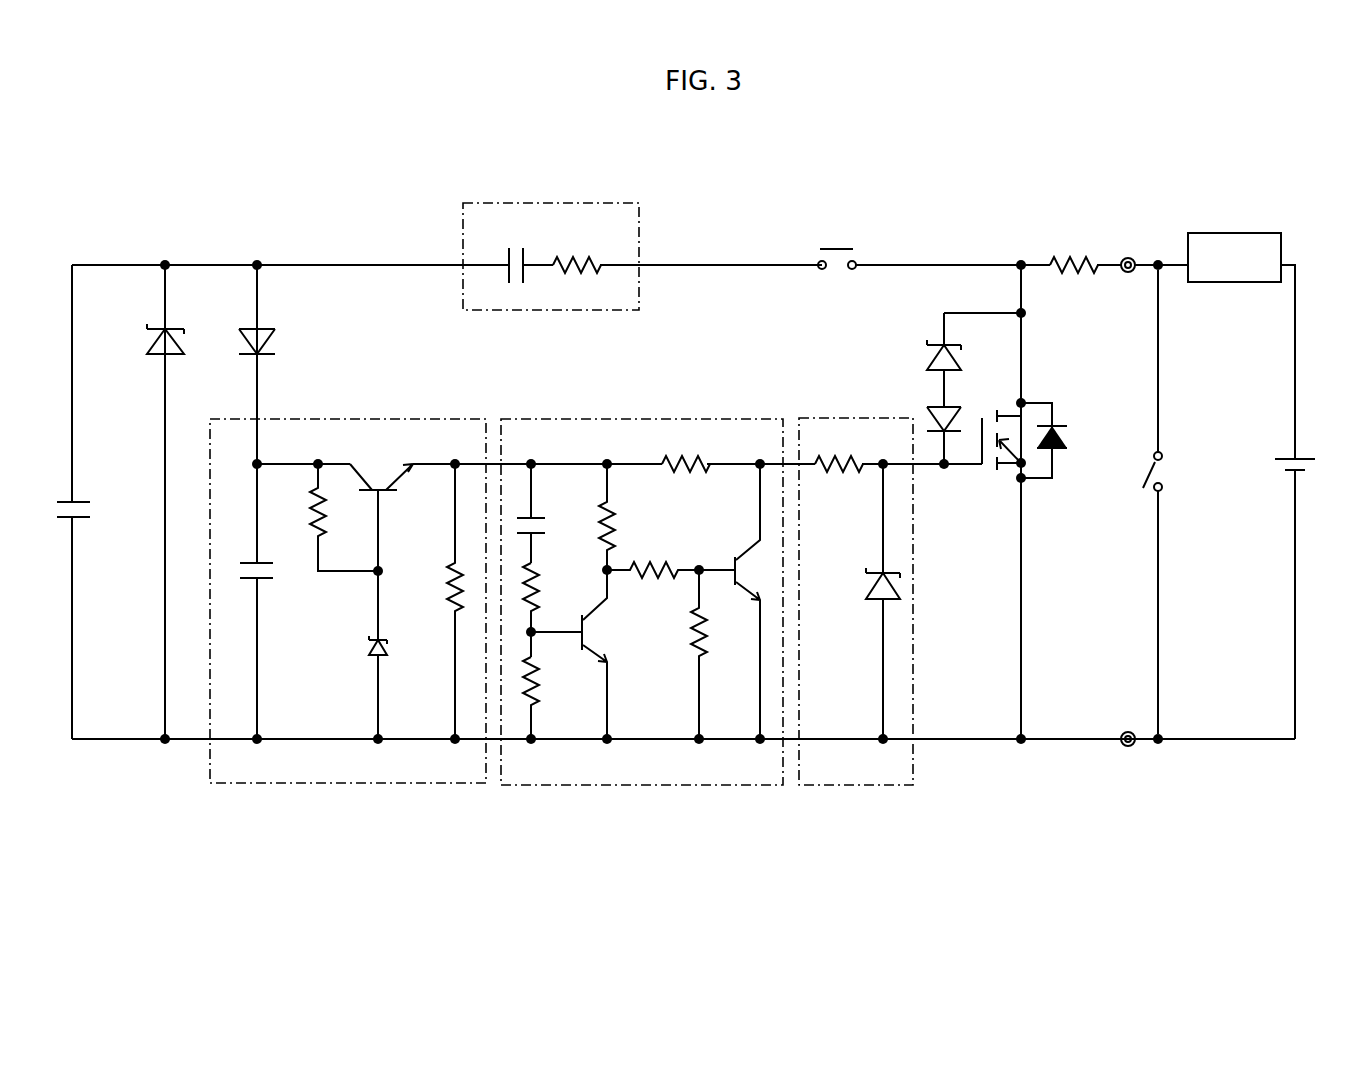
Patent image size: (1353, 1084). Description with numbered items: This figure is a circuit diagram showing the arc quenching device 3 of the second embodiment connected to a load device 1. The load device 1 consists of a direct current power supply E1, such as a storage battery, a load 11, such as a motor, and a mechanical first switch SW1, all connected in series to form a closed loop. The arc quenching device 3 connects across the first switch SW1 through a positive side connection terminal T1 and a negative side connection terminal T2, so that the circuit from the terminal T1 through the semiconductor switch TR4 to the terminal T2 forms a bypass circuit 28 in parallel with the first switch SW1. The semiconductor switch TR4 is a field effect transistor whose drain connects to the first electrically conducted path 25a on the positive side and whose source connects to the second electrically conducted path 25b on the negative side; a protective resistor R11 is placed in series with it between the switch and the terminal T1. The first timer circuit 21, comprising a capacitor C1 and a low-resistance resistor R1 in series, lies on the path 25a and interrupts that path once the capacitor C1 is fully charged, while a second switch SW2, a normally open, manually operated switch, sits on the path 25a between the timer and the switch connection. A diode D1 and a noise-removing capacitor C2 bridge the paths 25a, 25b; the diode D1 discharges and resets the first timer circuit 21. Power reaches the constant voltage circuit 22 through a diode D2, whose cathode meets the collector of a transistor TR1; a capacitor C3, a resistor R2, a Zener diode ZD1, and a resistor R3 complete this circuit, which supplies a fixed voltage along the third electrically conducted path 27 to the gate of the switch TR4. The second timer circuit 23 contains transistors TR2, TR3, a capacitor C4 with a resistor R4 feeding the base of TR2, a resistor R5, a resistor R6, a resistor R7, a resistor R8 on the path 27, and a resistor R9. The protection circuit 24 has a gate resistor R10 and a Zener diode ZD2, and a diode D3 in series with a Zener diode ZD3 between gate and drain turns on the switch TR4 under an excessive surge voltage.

The load device 1 is at (1320, 180).
The arc quenching device 3 is at (746, 237).
The load 11 is at (1247, 233).
The first timer circuit 21 is at (639, 205).
The constant voltage circuit 22 is at (356, 418).
The second timer circuit 23 is at (592, 418).
The protection circuit 24 is at (857, 418).
The first electrically conducted path 25a is at (960, 265).
The second electrically conducted path 25b is at (960, 741).
The third electrically conducted path 27 is at (477, 460).
The bypass circuit 28 is at (1014, 608).
The capacitor C1 is at (516, 253).
The capacitor C2 is at (91, 510).
The capacitor C3 is at (246, 556).
The capacitor C4 is at (543, 511).
The resistor R1 is at (577, 248).
The resistor R2 is at (327, 515).
The resistor R3 is at (438, 601).
The resistor R4 is at (548, 610).
The resistor R5 is at (548, 700).
The resistor R6 is at (590, 514).
The resistor R7 is at (653, 554).
The resistor R8 is at (686, 449).
The resistor R9 is at (716, 654).
The resistor R10 is at (840, 448).
The protective resistor R11 is at (1085, 249).
The diode D1 is at (150, 502).
The diode D2 is at (241, 502).
The diode D3 is at (937, 423).
The Zener diode ZD1 is at (354, 690).
The Zener diode ZD2 is at (857, 601).
The Zener diode ZD3 is at (957, 357).
The transistor TR1 is at (381, 536).
The transistor TR2 is at (587, 654).
The transistor TR3 is at (732, 601).
The semiconductor switch TR4 is at (1050, 440).
The first switch SW1 is at (1178, 507).
The second switch SW2 is at (838, 249).
The positive side connection terminal T1 is at (1133, 258).
The negative side connection terminal T2 is at (1128, 748).
The direct current power supply E1 is at (1312, 469).